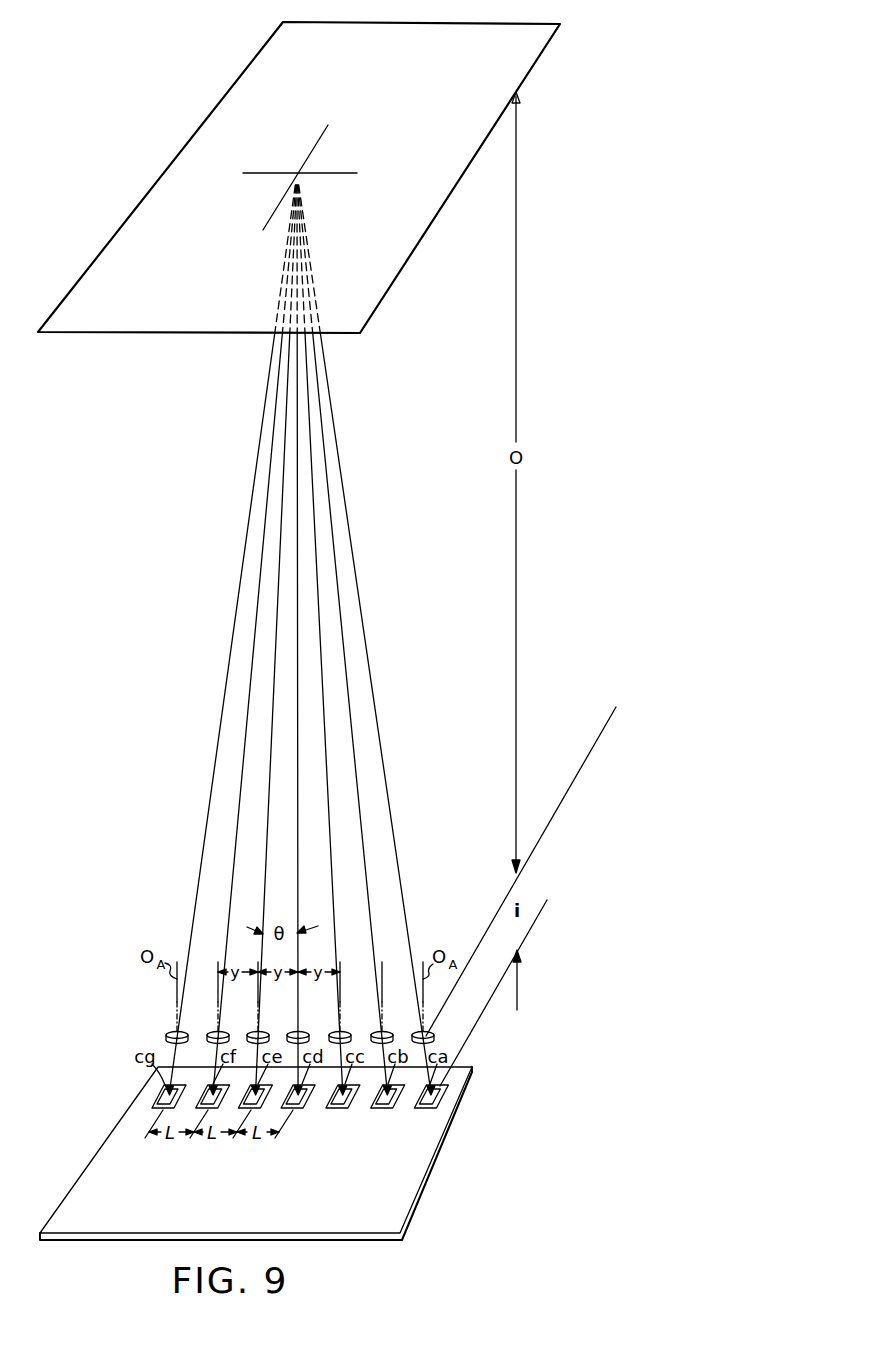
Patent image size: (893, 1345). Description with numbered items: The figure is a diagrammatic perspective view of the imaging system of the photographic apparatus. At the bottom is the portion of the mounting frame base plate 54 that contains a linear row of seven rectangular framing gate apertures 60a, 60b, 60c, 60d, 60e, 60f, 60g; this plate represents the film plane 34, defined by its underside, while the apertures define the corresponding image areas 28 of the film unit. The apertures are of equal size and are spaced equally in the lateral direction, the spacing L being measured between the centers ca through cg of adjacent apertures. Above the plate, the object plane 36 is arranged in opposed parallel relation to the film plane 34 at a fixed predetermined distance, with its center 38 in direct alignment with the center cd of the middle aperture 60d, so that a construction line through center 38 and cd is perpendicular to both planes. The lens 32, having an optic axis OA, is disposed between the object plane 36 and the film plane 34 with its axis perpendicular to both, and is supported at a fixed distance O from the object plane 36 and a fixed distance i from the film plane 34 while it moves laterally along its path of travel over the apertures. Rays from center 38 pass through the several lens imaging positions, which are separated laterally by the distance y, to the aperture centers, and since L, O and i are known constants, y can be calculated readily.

The image areas 28 is at (287, 1103).
The lens 32 is at (172, 1032).
The film plane 34 is at (415, 1210).
The object plane 36 is at (410, 257).
The center of object plane 38 is at (297, 173).
The mounting frame base plate 54 is at (93, 1188).
The framing gate aperture 60a is at (428, 1108).
The framing gate aperture 60b is at (388, 1108).
The framing gate aperture 60c is at (346, 1108).
The framing gate aperture 60d is at (300, 1108).
The framing gate aperture 60e is at (250, 1096).
The framing gate aperture 60f is at (208, 1086).
The framing gate aperture 60g is at (152, 1100).